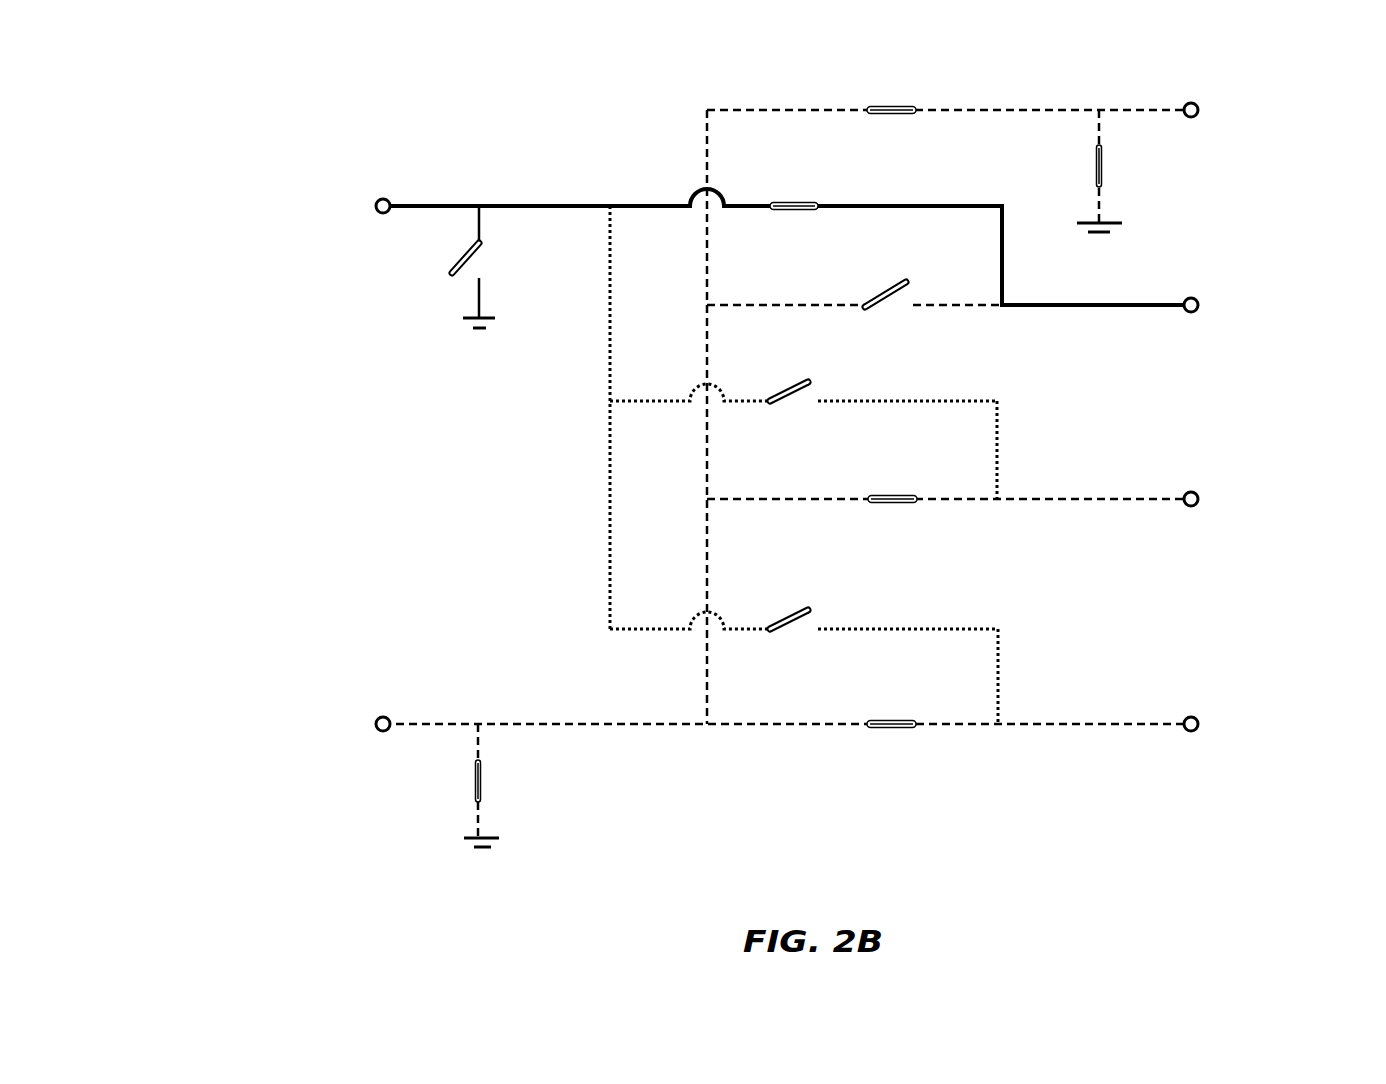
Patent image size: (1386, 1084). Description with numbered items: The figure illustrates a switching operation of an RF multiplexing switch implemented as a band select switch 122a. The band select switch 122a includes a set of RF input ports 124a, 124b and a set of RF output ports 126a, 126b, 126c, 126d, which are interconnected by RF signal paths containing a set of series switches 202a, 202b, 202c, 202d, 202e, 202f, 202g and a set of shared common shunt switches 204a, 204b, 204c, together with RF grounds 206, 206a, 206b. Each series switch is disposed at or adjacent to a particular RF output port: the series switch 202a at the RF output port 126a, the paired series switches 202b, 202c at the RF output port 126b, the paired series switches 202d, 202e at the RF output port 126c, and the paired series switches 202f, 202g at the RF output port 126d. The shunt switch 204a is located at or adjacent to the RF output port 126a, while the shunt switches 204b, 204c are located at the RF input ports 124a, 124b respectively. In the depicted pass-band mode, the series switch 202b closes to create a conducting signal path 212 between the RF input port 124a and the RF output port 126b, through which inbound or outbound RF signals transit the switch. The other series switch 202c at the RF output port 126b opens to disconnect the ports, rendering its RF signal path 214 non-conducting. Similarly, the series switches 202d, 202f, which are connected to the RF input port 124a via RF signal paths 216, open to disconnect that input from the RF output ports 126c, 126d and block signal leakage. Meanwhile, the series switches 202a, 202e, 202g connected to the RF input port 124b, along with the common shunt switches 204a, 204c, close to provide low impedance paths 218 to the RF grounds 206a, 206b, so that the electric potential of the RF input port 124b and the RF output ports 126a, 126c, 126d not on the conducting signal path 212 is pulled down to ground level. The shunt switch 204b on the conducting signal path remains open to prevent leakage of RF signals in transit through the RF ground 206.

The band select switch 122a is at (244, 93).
The RF input port 124a is at (375, 217).
The RF input port 124b is at (375, 718).
The RF output port 126a is at (1200, 115).
The RF output port 126b is at (1200, 310).
The RF output port 126c is at (1202, 500).
The RF output port 126d is at (1200, 718).
The series switch 202a is at (913, 93).
The series switch 202b is at (812, 182).
The series switch 202c is at (858, 277).
The series switch 202d is at (834, 378).
The series switch 202e is at (911, 521).
The series switch 202f is at (808, 644).
The series switch 202g is at (882, 742).
The shunt switch 204a is at (1131, 178).
The shunt switch 204b is at (449, 295).
The shunt switch 204c is at (441, 790).
The RF ground 206 is at (482, 330).
The RF ground 206a is at (1107, 233).
The RF ground 206b is at (493, 837).
The conducting signal path 212 is at (558, 205).
The RF signal path 214 is at (967, 305).
The RF signal path 216 is at (996, 425).
The low impedance path 218 is at (707, 157).